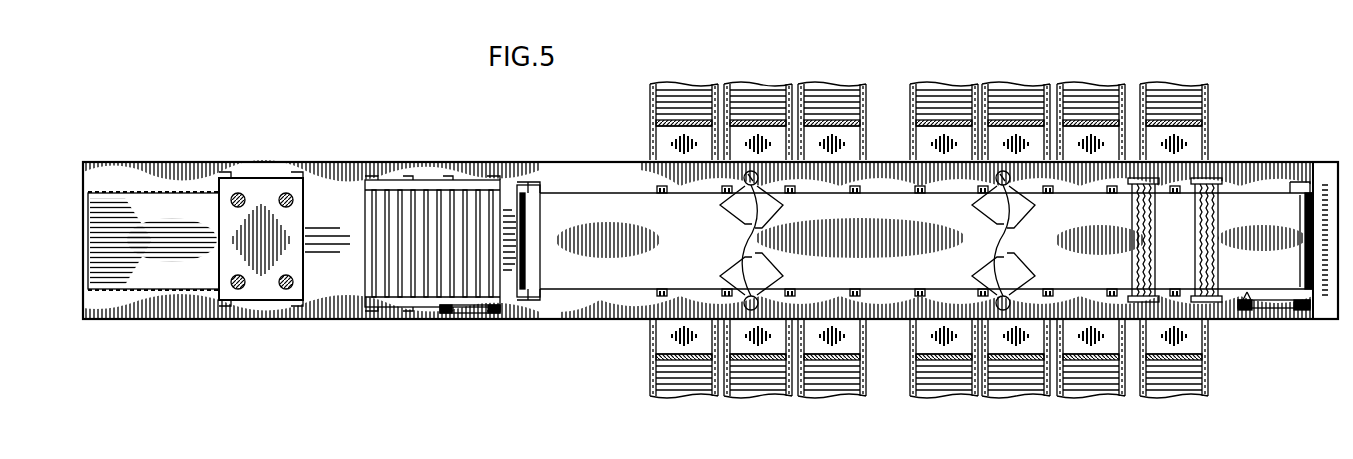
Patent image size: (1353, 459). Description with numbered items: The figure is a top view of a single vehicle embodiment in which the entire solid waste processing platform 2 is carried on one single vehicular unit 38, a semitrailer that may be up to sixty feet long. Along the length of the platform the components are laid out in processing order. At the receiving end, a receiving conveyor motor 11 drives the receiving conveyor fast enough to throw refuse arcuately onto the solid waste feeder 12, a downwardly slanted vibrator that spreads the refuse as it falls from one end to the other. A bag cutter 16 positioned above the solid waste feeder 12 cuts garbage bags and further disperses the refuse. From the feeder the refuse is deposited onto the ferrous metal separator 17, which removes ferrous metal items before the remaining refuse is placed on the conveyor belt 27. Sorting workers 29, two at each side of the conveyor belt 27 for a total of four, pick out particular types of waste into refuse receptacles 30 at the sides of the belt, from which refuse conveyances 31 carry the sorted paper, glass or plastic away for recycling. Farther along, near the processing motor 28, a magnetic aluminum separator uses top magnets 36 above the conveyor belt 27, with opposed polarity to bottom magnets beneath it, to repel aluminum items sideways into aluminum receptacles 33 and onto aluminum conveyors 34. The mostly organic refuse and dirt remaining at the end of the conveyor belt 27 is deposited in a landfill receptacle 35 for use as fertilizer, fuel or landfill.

The solid waste processing platform 2 is at (530, 315).
The receiving conveyor motor 11 is at (432, 300).
The solid waste feeder 12 is at (163, 265).
The bag cutter 16 is at (265, 340).
The ferrous metal separator 17 is at (451, 346).
The conveyor belt 27 is at (610, 250).
The processing motor 28 is at (1262, 311).
The sorting worker 29 is at (887, 240).
The refuse receptacle 30 is at (857, 149).
The refuse conveyance 31 is at (935, 95).
The aluminum receptacle 33 is at (1196, 134).
The aluminum conveyor 34 is at (1198, 90).
The landfill receptacle 35 is at (1325, 162).
The top magnet 36 is at (1200, 225).
The single vehicular unit 38 is at (227, 77).